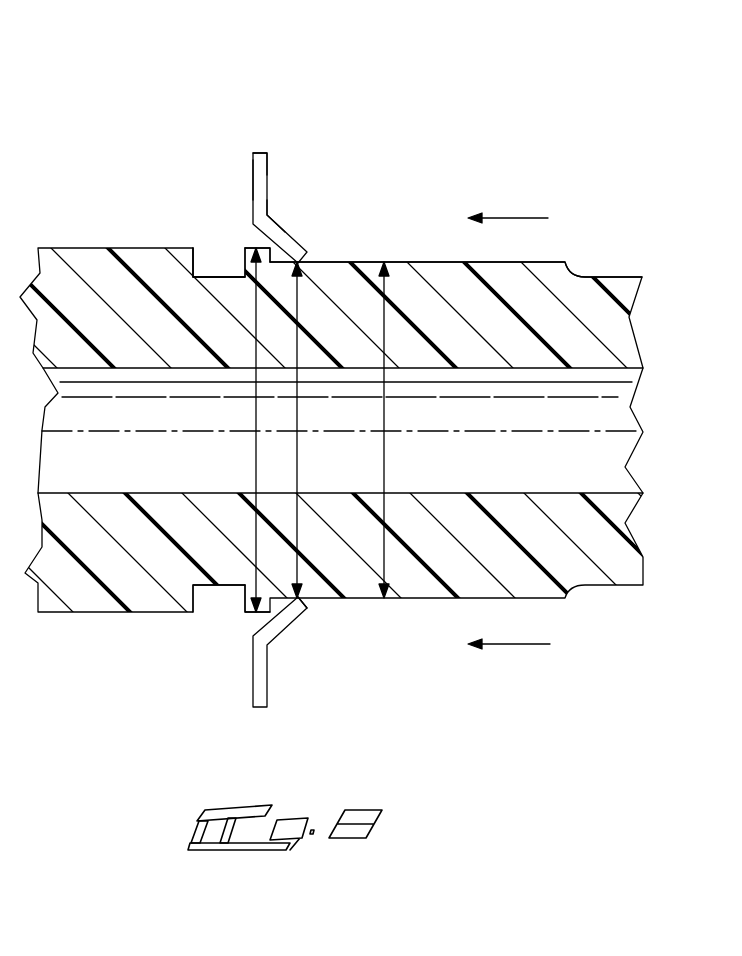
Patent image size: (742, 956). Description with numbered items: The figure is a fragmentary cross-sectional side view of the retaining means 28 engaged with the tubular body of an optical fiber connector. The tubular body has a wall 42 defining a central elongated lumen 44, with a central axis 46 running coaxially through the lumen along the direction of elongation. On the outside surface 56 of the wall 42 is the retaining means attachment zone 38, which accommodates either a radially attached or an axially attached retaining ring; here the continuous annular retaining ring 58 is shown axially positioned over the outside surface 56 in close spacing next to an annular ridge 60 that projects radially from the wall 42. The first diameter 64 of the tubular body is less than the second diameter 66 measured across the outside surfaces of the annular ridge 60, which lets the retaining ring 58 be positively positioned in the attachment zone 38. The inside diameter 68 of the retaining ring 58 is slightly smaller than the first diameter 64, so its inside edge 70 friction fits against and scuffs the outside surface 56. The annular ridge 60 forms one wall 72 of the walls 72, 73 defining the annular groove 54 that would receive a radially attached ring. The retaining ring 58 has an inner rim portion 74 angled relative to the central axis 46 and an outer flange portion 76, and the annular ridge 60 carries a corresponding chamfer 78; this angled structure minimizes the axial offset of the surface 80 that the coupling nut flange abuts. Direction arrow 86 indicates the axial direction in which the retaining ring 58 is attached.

The retaining means 28 is at (442, 123).
The retaining means attachment zone 38 is at (223, 230).
The wall 42 is at (607, 320).
The central elongated lumen 44 is at (550, 491).
The central axis 46 is at (585, 432).
The annular groove 54 is at (207, 267).
The outside surface 56 is at (548, 262).
The retaining ring 58 is at (270, 212).
The annular ridge 60 is at (252, 247).
The first diameter 64 is at (385, 468).
The second diameter 66 is at (253, 455).
The inside diameter 68 is at (298, 470).
The inside edge 70 is at (303, 596).
The wall 72 is at (240, 602).
The wall 73 is at (203, 603).
The inner rim portion 74 is at (290, 243).
The outer flange portion 76 is at (268, 171).
The chamfer 78 is at (250, 613).
The surface 80 is at (253, 175).
The direction arrow 86 is at (510, 218).